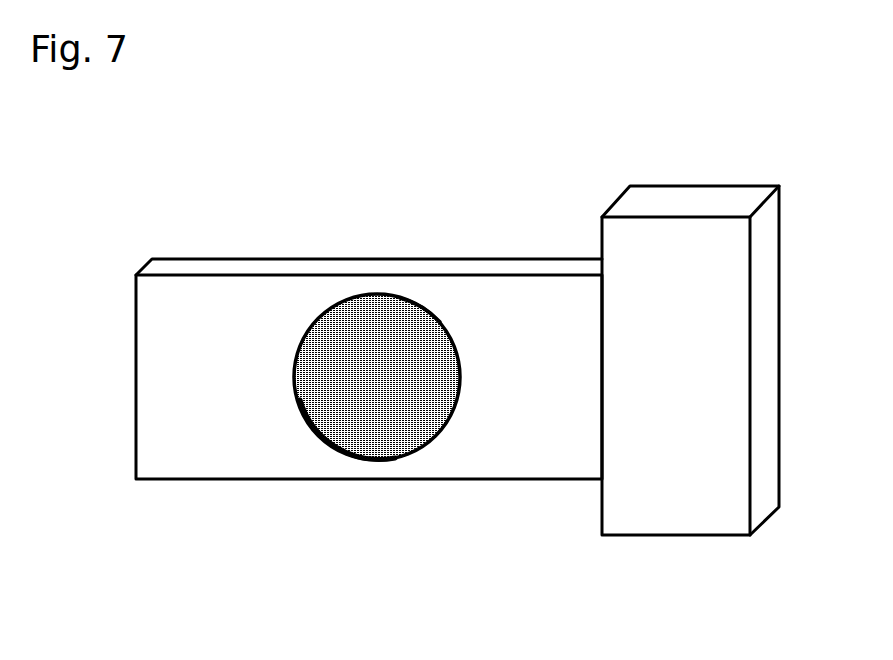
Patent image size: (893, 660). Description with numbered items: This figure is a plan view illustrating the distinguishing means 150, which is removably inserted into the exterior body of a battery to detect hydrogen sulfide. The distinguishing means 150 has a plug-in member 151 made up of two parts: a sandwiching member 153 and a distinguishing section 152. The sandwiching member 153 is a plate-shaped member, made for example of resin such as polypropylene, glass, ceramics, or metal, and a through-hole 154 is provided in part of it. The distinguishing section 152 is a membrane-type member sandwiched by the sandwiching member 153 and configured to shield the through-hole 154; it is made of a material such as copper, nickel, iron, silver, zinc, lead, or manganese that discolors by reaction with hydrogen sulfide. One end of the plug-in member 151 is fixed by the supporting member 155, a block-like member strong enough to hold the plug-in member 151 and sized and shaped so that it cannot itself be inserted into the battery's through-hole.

The distinguishing means 150 is at (452, 100).
The plug-in member 151 is at (293, 551).
The distinguishing section 152 is at (370, 430).
The sandwiching member 153 is at (293, 428).
The through-hole 154 is at (410, 323).
The supporting member 155 is at (717, 232).